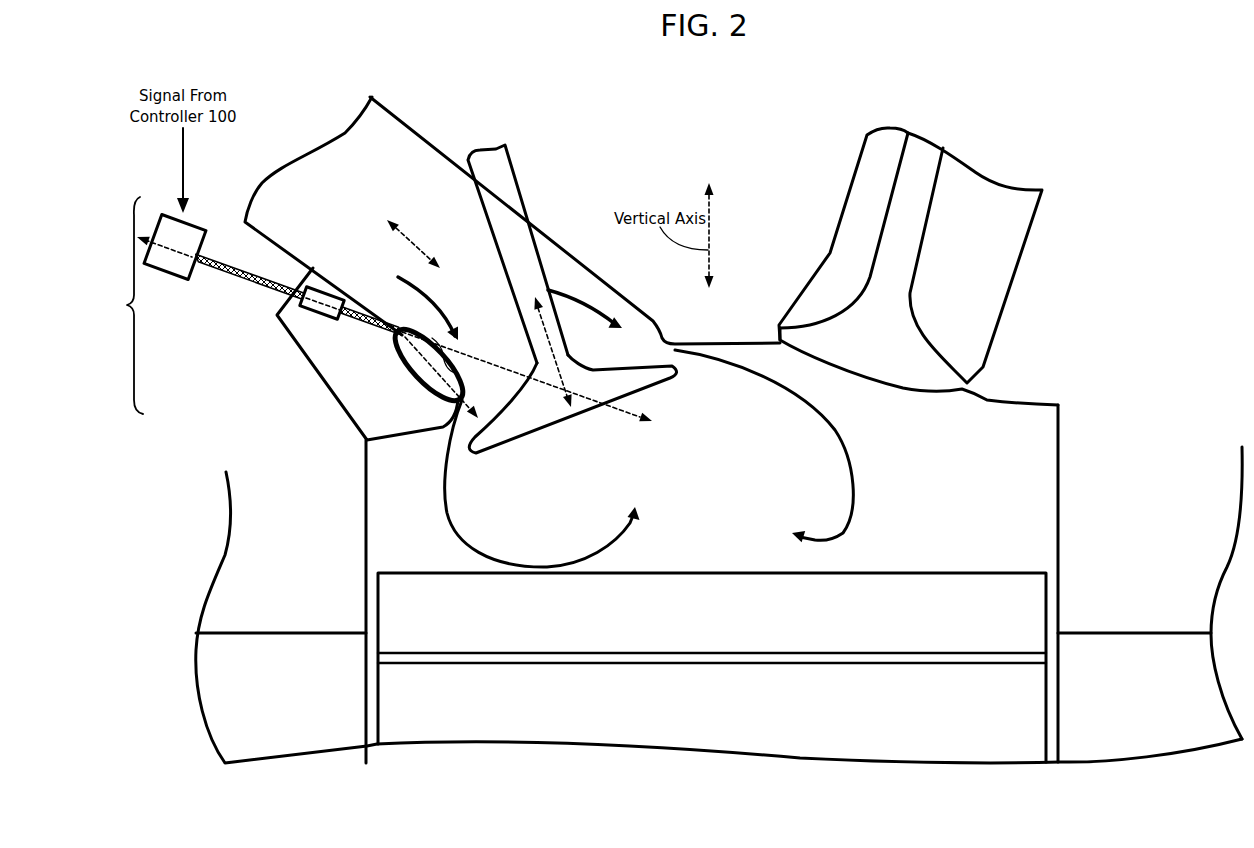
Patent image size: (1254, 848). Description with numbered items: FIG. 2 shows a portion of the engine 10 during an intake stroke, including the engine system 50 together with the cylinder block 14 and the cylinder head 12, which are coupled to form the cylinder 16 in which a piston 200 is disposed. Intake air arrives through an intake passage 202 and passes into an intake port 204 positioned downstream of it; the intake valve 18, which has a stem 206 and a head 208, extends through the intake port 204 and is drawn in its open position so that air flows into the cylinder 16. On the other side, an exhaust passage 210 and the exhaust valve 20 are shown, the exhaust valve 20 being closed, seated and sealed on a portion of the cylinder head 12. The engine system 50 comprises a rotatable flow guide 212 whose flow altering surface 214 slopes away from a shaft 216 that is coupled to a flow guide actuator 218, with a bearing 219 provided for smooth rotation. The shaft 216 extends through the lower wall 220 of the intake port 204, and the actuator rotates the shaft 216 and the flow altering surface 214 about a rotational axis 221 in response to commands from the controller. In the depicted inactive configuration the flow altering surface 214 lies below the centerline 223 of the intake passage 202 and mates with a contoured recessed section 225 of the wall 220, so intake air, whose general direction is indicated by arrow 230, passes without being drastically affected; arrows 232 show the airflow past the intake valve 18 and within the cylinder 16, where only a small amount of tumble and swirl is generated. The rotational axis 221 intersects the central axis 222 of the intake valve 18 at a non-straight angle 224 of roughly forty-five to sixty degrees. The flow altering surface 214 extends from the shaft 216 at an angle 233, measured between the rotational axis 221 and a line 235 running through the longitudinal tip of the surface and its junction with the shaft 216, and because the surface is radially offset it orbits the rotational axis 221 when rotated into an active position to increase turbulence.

The engine 10 is at (1142, 250).
The cylinder head 12 is at (283, 584).
The cylinder block 14 is at (283, 699).
The cylinder 16 is at (718, 489).
The intake valve 18 is at (537, 197).
The exhaust valve 20 is at (920, 217).
The engine system 50 is at (122, 305).
The piston 200 is at (697, 626).
The intake passage 202 is at (313, 174).
The intake port 204 is at (472, 311).
The stem 206 is at (505, 238).
The head 208 is at (522, 425).
The exhaust passage 210 is at (948, 299).
The rotatable flow guide 212 is at (324, 356).
The flow altering surface 214 is at (407, 366).
The shaft 216 is at (382, 333).
The flow guide actuator 218 is at (185, 281).
The bearing 219 is at (320, 316).
The wall 220 is at (372, 406).
The rotational axis 221 is at (640, 419).
The central axis 222 is at (558, 368).
The centerline 223 is at (405, 233).
The angle 224 is at (535, 358).
The section 225 is at (421, 388).
The arrow 230 is at (398, 280).
The arrows 232 is at (570, 285).
The angle 233 is at (459, 360).
The line 235 is at (458, 398).